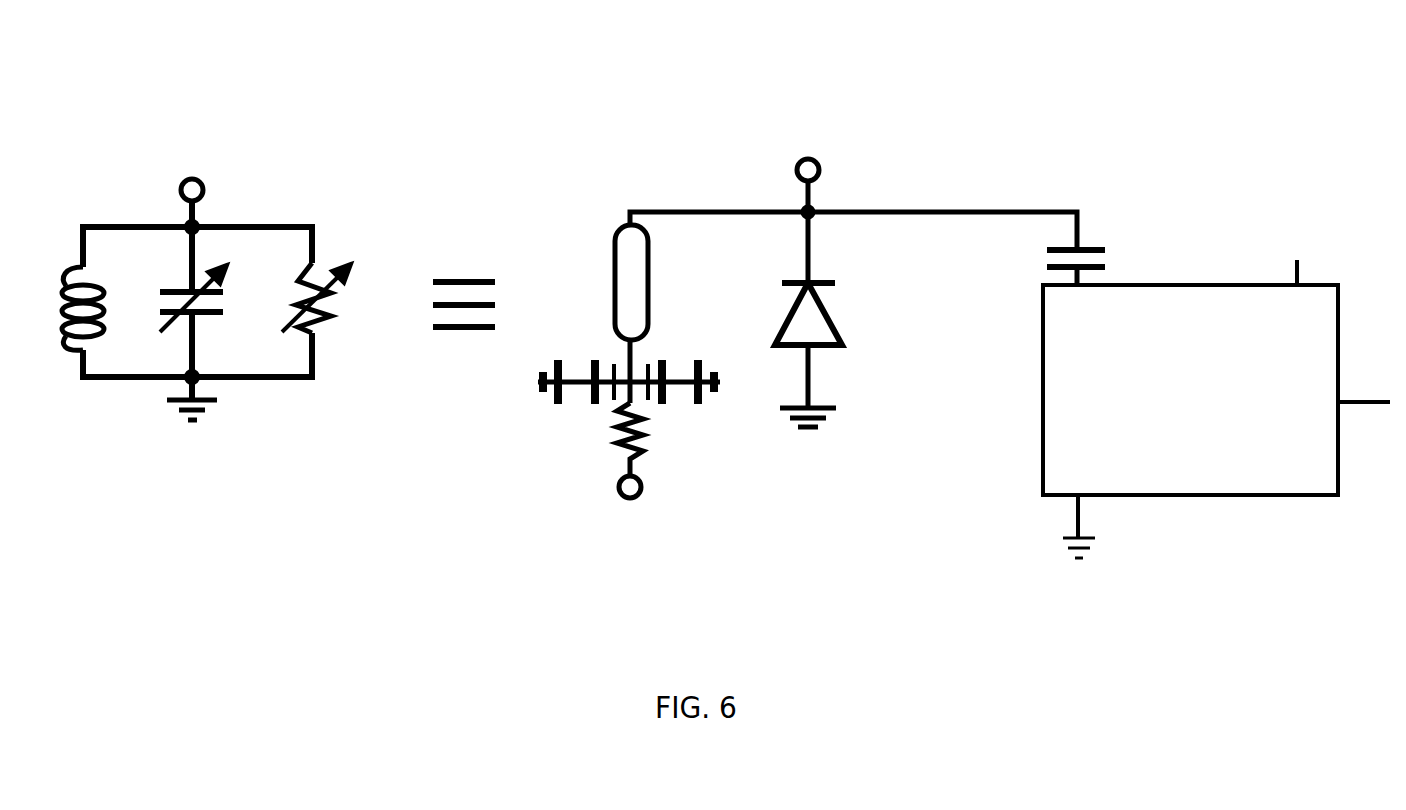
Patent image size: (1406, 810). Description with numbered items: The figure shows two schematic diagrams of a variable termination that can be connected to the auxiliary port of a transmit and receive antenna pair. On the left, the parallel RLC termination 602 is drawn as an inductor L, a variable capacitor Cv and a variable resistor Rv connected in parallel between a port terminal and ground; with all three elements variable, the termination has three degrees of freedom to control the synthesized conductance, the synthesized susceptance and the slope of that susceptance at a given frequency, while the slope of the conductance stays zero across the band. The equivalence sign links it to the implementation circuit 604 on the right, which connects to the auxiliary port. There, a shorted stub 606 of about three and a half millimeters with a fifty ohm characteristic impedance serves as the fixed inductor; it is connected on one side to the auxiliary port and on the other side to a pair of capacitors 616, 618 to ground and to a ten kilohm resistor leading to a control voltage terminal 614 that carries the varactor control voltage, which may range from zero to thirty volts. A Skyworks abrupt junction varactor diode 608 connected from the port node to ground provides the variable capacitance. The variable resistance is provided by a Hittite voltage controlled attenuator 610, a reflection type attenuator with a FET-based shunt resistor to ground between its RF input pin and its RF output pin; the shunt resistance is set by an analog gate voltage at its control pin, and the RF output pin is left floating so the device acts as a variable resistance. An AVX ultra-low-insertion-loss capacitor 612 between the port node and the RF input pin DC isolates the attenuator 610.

The equivalent resonant circuit (L, CV, RV) 602 is at (250, 123).
The implementation circuit 604 is at (1066, 100).
The inductor 606 is at (612, 263).
The varactor diode 608 is at (787, 317).
The variable attenuator IC (Hittite HMC973) 610 is at (1200, 481).
The coupling capacitor 612 is at (1088, 250).
The control voltage terminal 614 is at (622, 458).
The capacitor 616 is at (587, 363).
The capacitor 618 is at (673, 363).